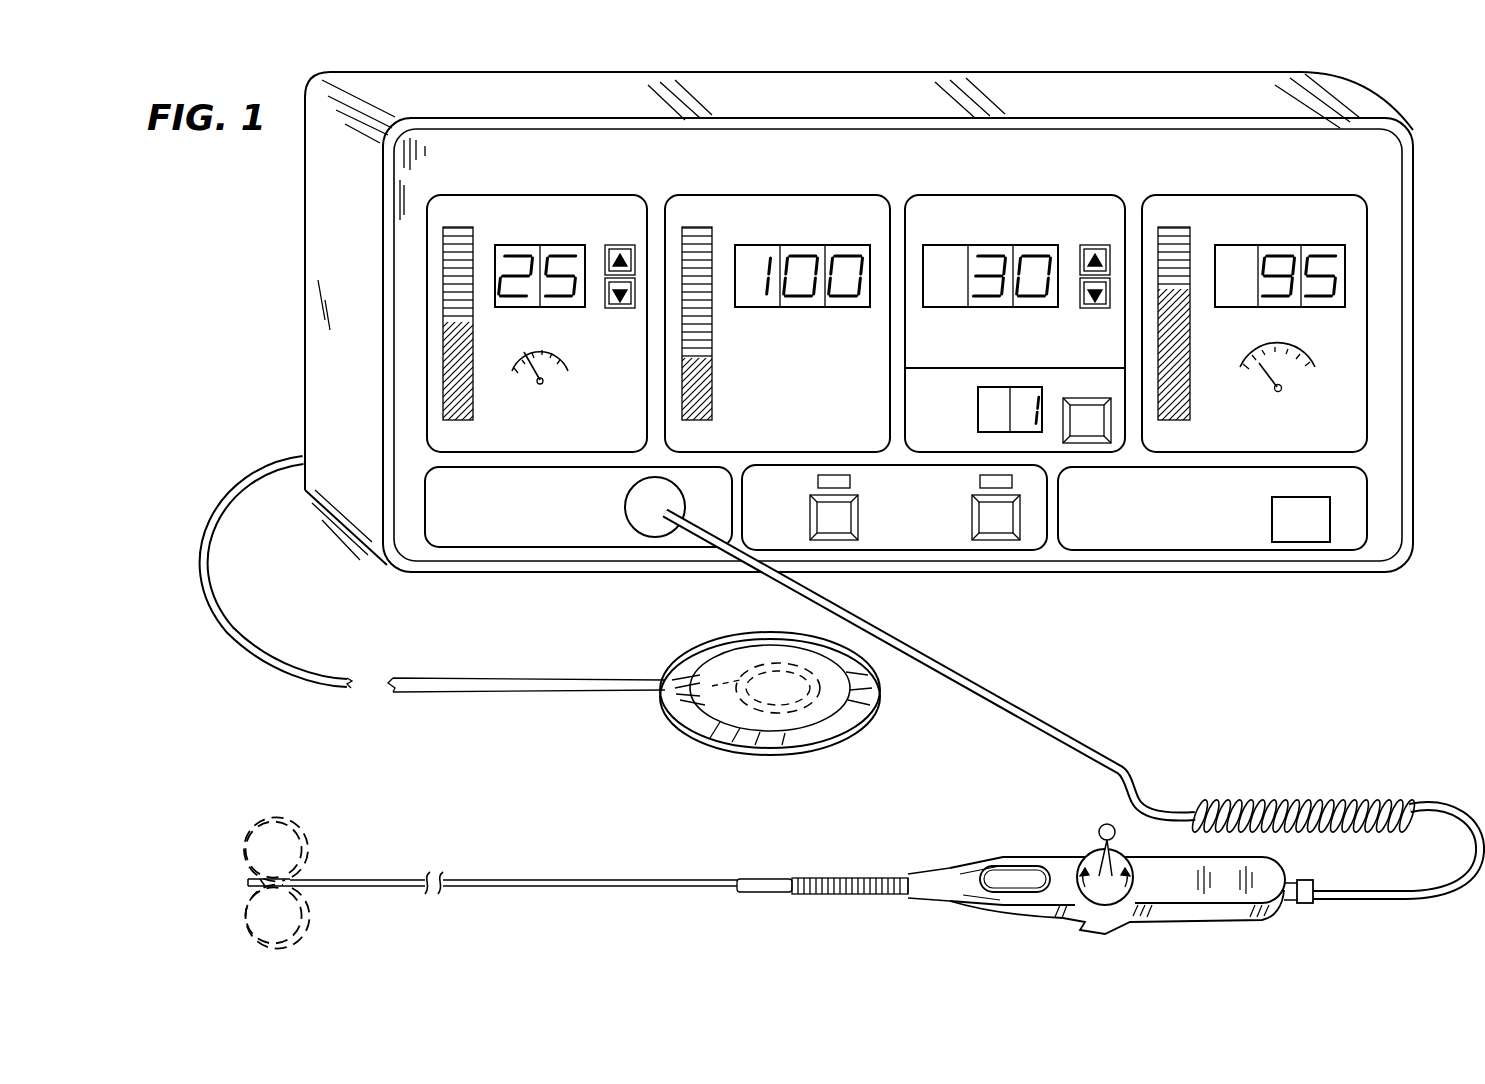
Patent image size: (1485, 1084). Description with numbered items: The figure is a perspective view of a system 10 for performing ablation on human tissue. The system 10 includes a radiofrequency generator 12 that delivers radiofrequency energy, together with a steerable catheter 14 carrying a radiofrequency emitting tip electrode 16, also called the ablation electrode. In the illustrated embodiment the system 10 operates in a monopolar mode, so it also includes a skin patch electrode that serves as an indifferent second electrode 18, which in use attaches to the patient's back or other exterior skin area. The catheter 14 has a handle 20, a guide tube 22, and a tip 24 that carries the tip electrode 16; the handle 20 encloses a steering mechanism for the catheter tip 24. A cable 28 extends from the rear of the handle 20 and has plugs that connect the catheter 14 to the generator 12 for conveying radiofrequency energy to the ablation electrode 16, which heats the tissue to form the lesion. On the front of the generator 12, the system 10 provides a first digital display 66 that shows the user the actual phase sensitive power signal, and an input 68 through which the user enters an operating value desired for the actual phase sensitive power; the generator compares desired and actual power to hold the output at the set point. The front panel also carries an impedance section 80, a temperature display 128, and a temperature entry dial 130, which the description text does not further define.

The system 10 is at (248, 356).
The radiofrequency generator 12 is at (1205, 98).
The steerable catheter 14 is at (995, 848).
The tip electrode 16 is at (240, 878).
The indifferent second electrode 18 is at (752, 735).
The handle 20 is at (1185, 905).
The guide tube 22 is at (668, 888).
The tip 24 is at (288, 830).
The cable 28 is at (1003, 692).
The first digital display 66 is at (489, 208).
The input 68 is at (572, 370).
The impedance display section 80 is at (777, 193).
The temperature display 128 is at (1258, 242).
The temperature entry dial 130 is at (1315, 375).